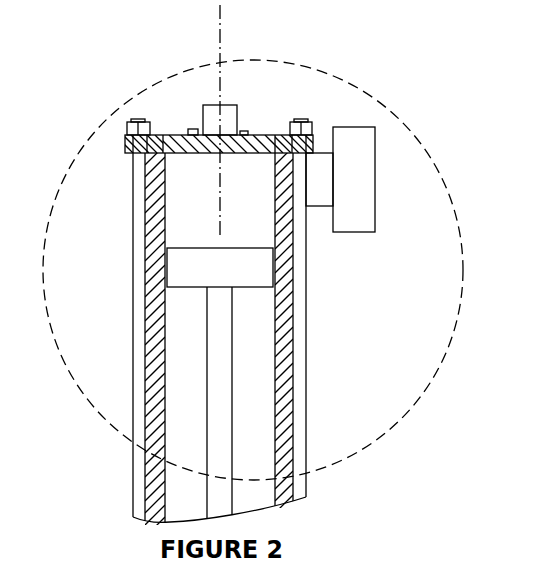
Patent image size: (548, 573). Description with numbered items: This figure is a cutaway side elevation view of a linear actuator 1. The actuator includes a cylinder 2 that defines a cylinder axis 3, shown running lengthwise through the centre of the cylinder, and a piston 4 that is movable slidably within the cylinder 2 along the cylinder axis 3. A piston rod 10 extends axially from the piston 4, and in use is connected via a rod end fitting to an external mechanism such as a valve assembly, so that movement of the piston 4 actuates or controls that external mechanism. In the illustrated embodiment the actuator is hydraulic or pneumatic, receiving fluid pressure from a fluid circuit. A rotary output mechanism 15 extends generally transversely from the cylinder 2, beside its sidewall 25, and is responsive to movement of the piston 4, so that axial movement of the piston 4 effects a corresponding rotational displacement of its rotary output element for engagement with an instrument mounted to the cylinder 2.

The linear actuator 1 is at (112, 198).
The cylinder 2 is at (298, 332).
The cylinder axis 3 is at (220, 43).
The piston 4 is at (252, 265).
The piston rod 10 is at (220, 427).
The rotary output mechanism 15 is at (325, 163).
The sidewall 25 is at (312, 297).